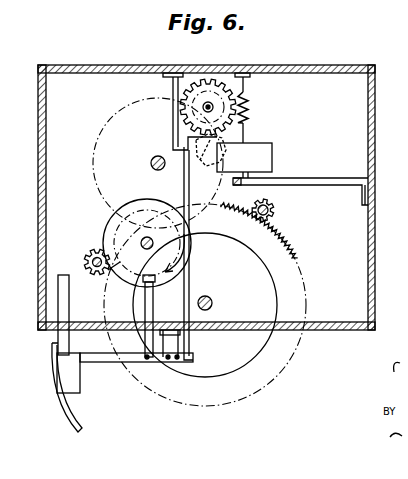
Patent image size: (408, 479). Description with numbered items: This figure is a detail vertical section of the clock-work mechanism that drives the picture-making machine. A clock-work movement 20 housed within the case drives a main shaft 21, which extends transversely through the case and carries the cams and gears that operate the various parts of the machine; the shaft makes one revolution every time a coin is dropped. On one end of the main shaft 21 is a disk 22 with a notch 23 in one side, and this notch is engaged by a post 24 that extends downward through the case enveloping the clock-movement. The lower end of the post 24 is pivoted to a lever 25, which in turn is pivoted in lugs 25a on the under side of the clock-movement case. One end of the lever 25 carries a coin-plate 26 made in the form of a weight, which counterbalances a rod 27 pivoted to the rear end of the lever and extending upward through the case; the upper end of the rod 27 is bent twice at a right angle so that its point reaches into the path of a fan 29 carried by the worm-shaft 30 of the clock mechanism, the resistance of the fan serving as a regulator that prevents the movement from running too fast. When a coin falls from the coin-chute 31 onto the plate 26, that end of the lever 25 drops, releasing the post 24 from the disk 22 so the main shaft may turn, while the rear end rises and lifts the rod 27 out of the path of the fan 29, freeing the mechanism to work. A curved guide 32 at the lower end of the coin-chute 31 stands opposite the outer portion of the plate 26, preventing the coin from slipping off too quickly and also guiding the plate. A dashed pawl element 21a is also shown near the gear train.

The clock-work movement 20 is at (259, 228).
The main shaft 21 is at (144, 241).
The pawl 21a is at (209, 150).
The disk 22 is at (104, 236).
The notch 23 is at (112, 267).
The post 24 is at (153, 312).
The lever 25 is at (136, 364).
The lugs 25a is at (179, 364).
The coin-plate 26 is at (73, 375).
The rod 27 is at (205, 305).
The fan 29 is at (257, 152).
The worm-shaft 30 is at (248, 116).
The coin-chute 31 is at (70, 298).
The curved guide 32 is at (64, 420).